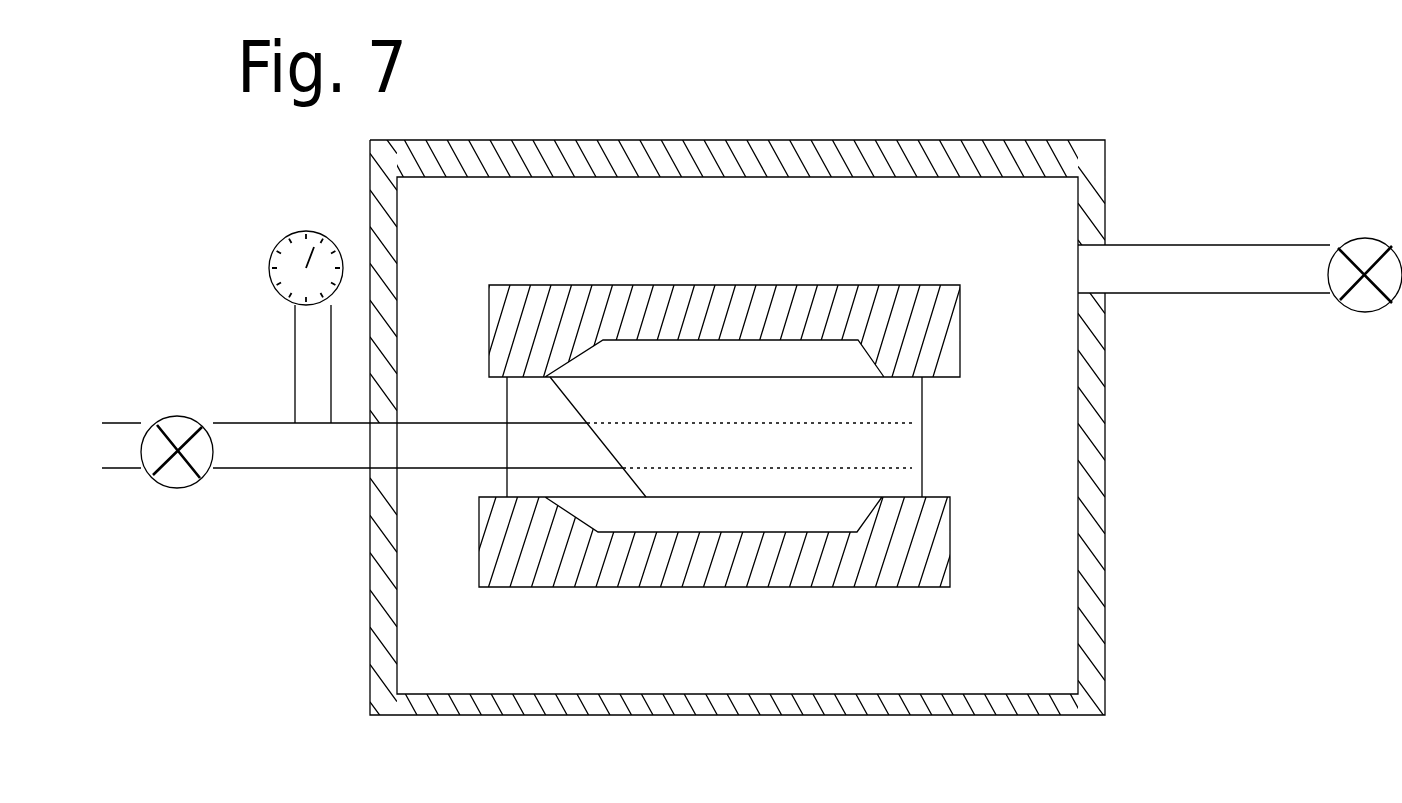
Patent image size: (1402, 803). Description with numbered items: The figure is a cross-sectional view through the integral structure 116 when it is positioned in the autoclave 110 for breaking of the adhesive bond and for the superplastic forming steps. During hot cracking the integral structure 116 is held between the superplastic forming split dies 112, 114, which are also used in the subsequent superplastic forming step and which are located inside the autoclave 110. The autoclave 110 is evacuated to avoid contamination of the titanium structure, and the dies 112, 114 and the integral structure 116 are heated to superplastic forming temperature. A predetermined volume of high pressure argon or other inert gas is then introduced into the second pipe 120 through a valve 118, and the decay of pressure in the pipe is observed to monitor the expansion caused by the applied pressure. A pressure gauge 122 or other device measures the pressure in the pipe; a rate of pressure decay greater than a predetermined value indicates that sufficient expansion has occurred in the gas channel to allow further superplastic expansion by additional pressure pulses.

The autoclave 110 is at (764, 129).
The superplastic forming split die 112 is at (553, 575).
The superplastic forming split die 114 is at (612, 243).
The integral structure 116 is at (704, 482).
The valve 118 is at (316, 470).
The second pipe 120 is at (168, 488).
The pressure gauge 122 is at (328, 200).